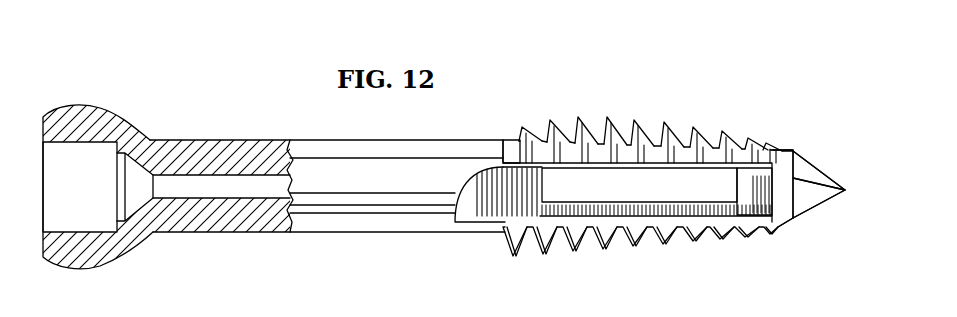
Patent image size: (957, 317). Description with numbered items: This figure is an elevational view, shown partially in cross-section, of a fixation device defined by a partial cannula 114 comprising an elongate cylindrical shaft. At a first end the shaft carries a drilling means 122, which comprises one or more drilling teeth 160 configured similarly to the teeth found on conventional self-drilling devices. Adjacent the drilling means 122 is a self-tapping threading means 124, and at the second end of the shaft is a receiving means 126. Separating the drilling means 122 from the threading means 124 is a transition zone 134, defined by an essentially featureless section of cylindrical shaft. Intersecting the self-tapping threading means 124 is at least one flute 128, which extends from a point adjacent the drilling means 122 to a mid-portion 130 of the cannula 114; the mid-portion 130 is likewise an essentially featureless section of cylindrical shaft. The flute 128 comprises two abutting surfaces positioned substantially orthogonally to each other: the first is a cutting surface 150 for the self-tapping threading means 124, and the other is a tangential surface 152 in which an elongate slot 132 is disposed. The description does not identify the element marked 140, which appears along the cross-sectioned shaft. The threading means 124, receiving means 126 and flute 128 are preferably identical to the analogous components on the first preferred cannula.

The partial cannula 114 is at (247, 45).
The receiving means 126 is at (90, 108).
The mid-portion 130 is at (312, 143).
The bore 140 is at (197, 193).
The cutting surface 150 is at (570, 162).
The self-tapping threading means 124 is at (634, 117).
The elongate slot 132 is at (668, 198).
The tangential surface 152 is at (507, 205).
The flute 128 is at (630, 232).
The transition zone 134 is at (787, 218).
The drilling teeth 160 is at (817, 200).
The drilling means 122 is at (817, 160).